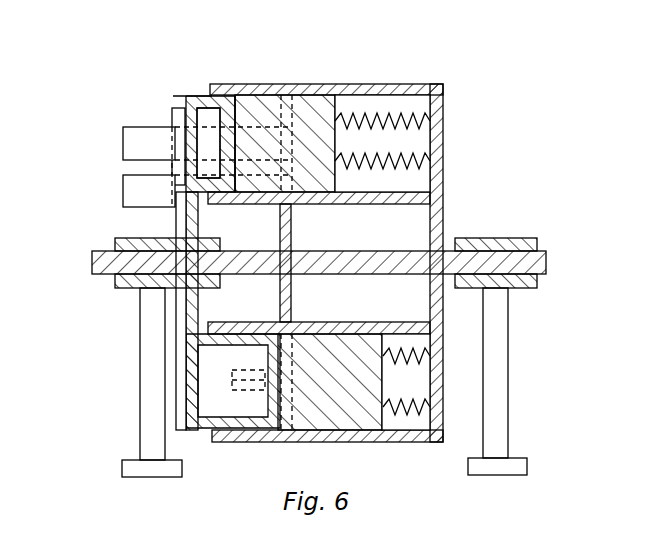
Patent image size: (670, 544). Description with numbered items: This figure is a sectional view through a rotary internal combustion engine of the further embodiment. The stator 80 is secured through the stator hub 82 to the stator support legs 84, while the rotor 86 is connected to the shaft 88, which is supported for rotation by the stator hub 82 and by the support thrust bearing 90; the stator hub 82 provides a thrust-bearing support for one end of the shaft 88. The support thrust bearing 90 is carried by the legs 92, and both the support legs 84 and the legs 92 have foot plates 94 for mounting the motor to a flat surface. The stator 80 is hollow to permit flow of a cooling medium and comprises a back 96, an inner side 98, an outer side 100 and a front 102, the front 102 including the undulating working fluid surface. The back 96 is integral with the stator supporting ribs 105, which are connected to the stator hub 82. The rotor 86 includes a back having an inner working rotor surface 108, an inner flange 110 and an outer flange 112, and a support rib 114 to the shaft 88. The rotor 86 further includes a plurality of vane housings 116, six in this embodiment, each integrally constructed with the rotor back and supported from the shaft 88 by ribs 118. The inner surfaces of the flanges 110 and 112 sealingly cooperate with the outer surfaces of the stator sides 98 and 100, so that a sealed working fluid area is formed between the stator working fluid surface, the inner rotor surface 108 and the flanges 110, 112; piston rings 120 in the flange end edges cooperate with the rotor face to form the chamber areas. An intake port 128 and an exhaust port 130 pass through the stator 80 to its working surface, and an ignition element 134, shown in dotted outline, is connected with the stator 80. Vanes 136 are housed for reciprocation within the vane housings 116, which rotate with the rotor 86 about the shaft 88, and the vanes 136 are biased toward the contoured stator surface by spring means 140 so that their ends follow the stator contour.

The stator 80 is at (186, 97).
The stator hub 82 is at (128, 240).
The stator support legs 84 is at (150, 398).
The rotor 86 is at (290, 95).
The shaft 88 is at (548, 262).
The support thrust bearing 90 is at (523, 238).
The legs 92 is at (502, 388).
The foot plates 94 is at (520, 467).
The back 96 is at (172, 118).
The inner side 98 is at (198, 95).
The outer side 100 is at (199, 200).
The front 102 is at (240, 118).
The stator supporting ribs 105 is at (190, 222).
The inner working rotor surface 108 is at (262, 430).
The inner flange 110 is at (223, 323).
The outer flange 112 is at (247, 442).
The support rib 114 is at (281, 232).
The vane housings 116 is at (418, 90).
The ribs 118 is at (443, 222).
The piston rings 120 is at (228, 95).
The intake port 128 is at (130, 136).
The exhaust port 130 is at (130, 187).
The ignition element 134 is at (232, 380).
The vanes 136 is at (332, 100).
The spring means 140 is at (428, 122).